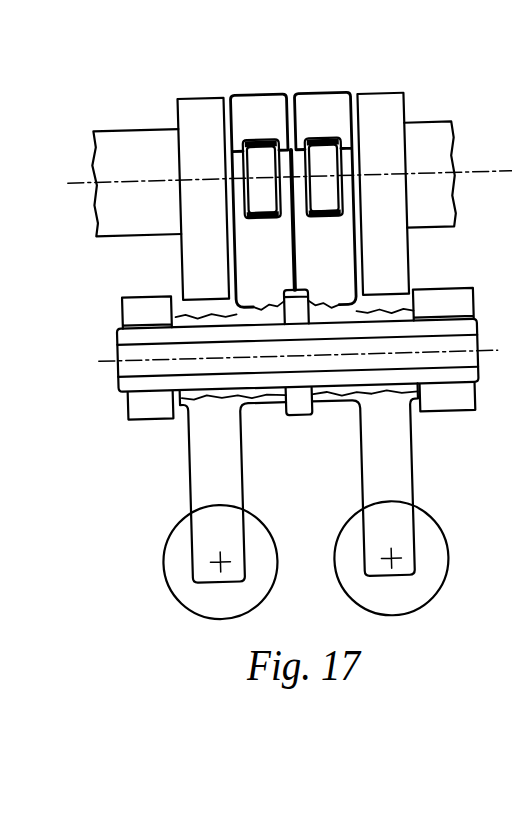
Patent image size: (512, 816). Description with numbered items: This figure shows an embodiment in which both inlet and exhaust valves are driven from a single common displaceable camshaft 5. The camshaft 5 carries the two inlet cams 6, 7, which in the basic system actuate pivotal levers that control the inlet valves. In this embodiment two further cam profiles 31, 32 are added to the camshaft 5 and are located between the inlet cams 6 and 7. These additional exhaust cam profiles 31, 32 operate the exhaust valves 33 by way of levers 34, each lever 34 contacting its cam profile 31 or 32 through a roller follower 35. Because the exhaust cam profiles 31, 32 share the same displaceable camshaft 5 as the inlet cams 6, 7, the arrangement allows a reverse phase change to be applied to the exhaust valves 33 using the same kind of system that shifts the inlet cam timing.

The camshaft 5 is at (160, 153).
The cam 6 is at (198, 123).
The cam 7 is at (375, 115).
The cam profile 31 is at (270, 113).
The cam profile 32 is at (335, 108).
The exhaust valve 33 is at (183, 590).
The lever 34 is at (220, 490).
The roller follower 35 is at (253, 163).